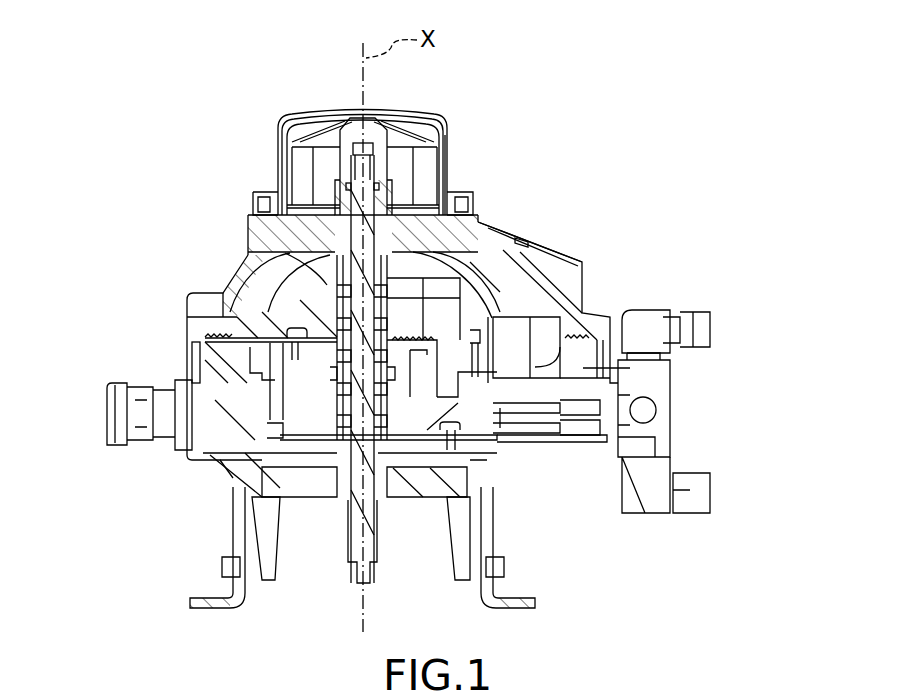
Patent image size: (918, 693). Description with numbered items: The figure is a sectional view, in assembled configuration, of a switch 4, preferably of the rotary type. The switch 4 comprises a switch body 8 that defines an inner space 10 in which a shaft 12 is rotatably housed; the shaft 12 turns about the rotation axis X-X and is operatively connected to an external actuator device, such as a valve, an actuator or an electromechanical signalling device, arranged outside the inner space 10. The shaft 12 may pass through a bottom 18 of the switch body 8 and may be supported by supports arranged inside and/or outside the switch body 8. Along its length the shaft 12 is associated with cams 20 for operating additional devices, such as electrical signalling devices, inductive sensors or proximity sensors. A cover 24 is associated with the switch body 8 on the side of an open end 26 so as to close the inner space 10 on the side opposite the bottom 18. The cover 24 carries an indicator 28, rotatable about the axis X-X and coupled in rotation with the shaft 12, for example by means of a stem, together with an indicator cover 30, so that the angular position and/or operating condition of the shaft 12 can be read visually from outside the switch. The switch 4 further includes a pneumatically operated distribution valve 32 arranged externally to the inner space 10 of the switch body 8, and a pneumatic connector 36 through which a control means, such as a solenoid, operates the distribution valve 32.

The switch 4 is at (155, 150).
The switch body 8 is at (668, 367).
The inner space 10 is at (508, 308).
The shaft 12 is at (363, 145).
The bottom 18 is at (265, 458).
The cams 20 is at (328, 368).
The cover 24 is at (550, 262).
The open end 26 is at (275, 330).
The indicator 28 is at (325, 155).
The indicator cover 30 is at (445, 147).
The distribution valve 32 is at (668, 437).
The pneumatic connector 36 is at (585, 430).